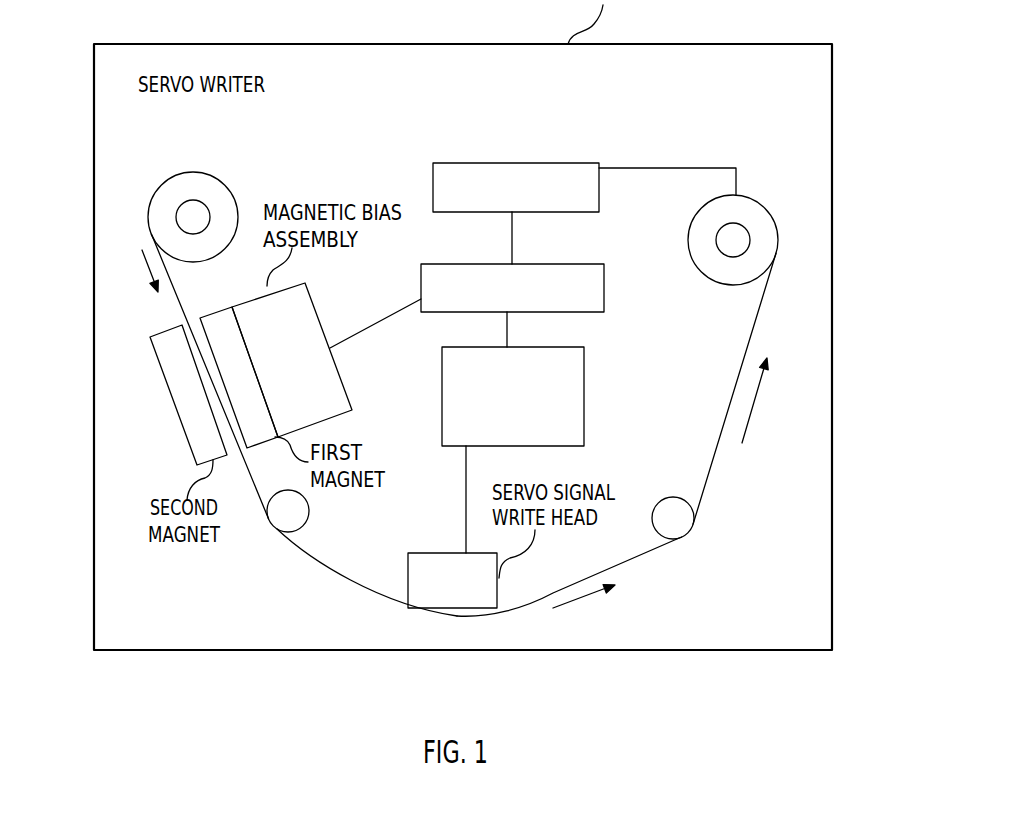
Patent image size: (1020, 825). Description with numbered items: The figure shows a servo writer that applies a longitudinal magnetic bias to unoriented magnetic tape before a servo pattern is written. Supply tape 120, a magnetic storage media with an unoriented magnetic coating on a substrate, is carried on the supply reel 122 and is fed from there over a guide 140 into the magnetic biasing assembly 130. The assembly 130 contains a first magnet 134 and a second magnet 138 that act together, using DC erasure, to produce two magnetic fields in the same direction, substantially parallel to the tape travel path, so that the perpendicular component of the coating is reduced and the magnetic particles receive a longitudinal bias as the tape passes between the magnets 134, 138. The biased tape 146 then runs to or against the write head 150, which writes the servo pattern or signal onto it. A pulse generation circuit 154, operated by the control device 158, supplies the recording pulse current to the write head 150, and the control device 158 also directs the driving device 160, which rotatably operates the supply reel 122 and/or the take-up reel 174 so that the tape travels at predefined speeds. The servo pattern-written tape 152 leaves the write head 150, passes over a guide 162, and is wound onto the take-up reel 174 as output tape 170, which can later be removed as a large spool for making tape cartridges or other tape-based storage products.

The supply tape 120 is at (192, 172).
The supply reel 122 is at (176, 208).
The magnetic biasing assembly 130 is at (336, 308).
The first magnet 134 is at (215, 313).
The second magnet 138 is at (150, 370).
The guide 140 is at (273, 527).
The biased tape 146 is at (323, 563).
The write head 150 is at (453, 554).
The servo pattern-written tape 152 is at (640, 557).
The pulse generation circuit 154 is at (584, 370).
The control device 158 is at (590, 264).
The driving device 160 is at (510, 163).
The guide 162 is at (689, 531).
The output tape 170 is at (777, 216).
The take-up reel 174 is at (727, 257).